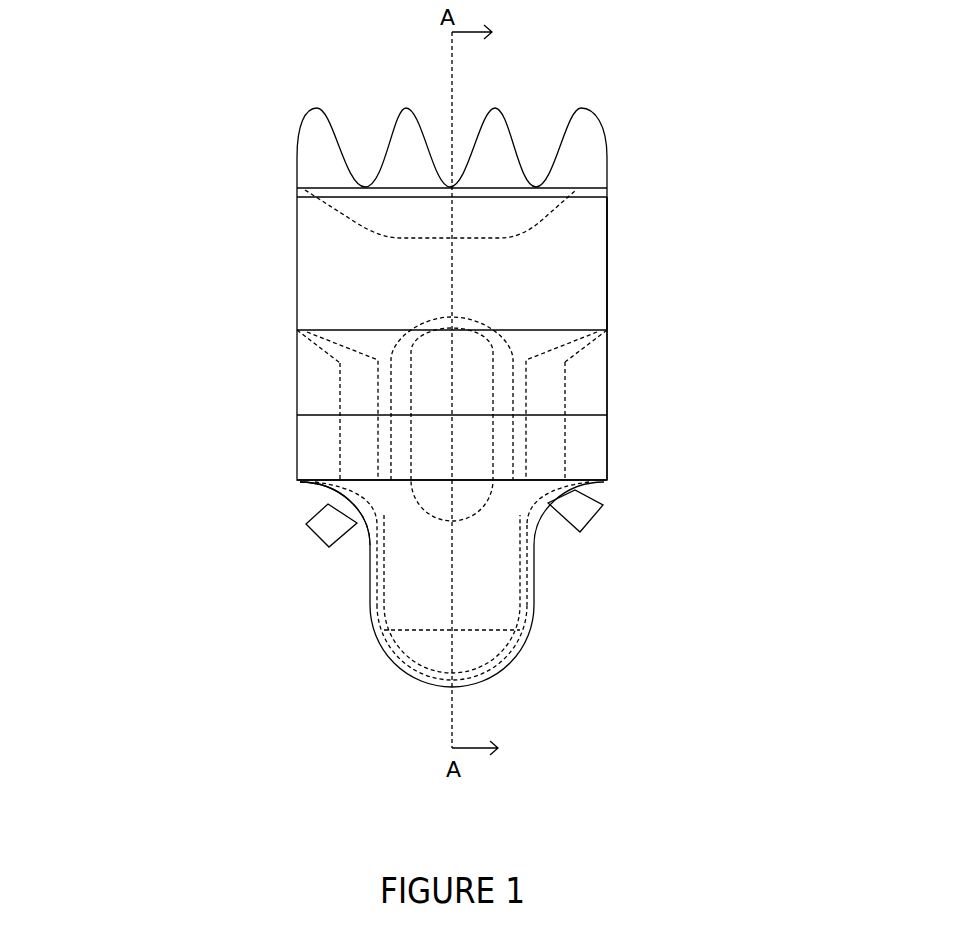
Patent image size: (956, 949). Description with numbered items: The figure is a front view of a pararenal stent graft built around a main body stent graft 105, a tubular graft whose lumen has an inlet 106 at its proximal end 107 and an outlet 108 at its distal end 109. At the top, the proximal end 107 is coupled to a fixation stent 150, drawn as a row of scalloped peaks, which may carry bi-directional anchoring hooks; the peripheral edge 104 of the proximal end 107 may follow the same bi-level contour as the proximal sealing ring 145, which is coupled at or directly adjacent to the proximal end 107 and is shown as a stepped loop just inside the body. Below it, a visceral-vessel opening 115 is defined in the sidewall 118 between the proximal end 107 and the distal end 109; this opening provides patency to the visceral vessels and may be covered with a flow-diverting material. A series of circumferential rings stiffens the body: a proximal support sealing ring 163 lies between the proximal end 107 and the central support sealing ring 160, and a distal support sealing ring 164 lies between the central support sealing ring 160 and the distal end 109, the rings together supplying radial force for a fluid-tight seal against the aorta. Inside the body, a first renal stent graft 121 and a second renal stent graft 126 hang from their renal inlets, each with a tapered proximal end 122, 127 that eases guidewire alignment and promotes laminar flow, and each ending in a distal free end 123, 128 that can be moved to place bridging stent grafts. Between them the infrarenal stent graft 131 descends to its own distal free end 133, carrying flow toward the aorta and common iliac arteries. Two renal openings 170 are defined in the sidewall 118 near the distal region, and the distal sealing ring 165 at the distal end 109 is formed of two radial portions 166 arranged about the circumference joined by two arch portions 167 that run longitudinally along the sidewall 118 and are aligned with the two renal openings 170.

The peripheral edge 104 is at (605, 188).
The main body stent graft 105 is at (608, 217).
The inlet 106 is at (605, 188).
The proximal end 107 is at (287, 197).
The outlet 108 is at (528, 613).
The distal end 109 is at (493, 685).
The visceral-vessel opening 115 is at (415, 382).
The sidewall 118 is at (610, 272).
The first renal stent graft 121 is at (340, 458).
The tapered proximal end of first renal lumen 122 is at (322, 350).
The distal free end of first renal lumen 123 is at (308, 529).
The second renal stent graft 126 is at (567, 450).
The tapered proximal end of second renal lumen 127 is at (595, 346).
The distal free end of second renal lumen 128 is at (597, 520).
The infrarenal stent graft 131 is at (522, 498).
The distal free end of infrarenal lumen 133 is at (425, 630).
The proximal sealing ring 145 is at (352, 227).
The fixation stent 150 is at (300, 150).
The central support sealing ring 160 is at (595, 412).
The proximal support sealing ring 163 is at (573, 330).
The distal support sealing ring 164 is at (593, 480).
The distal sealing ring 165 is at (498, 657).
The radial portions 166 is at (333, 487).
The arch portions 167 is at (435, 675).
The renal openings 170 is at (348, 563).